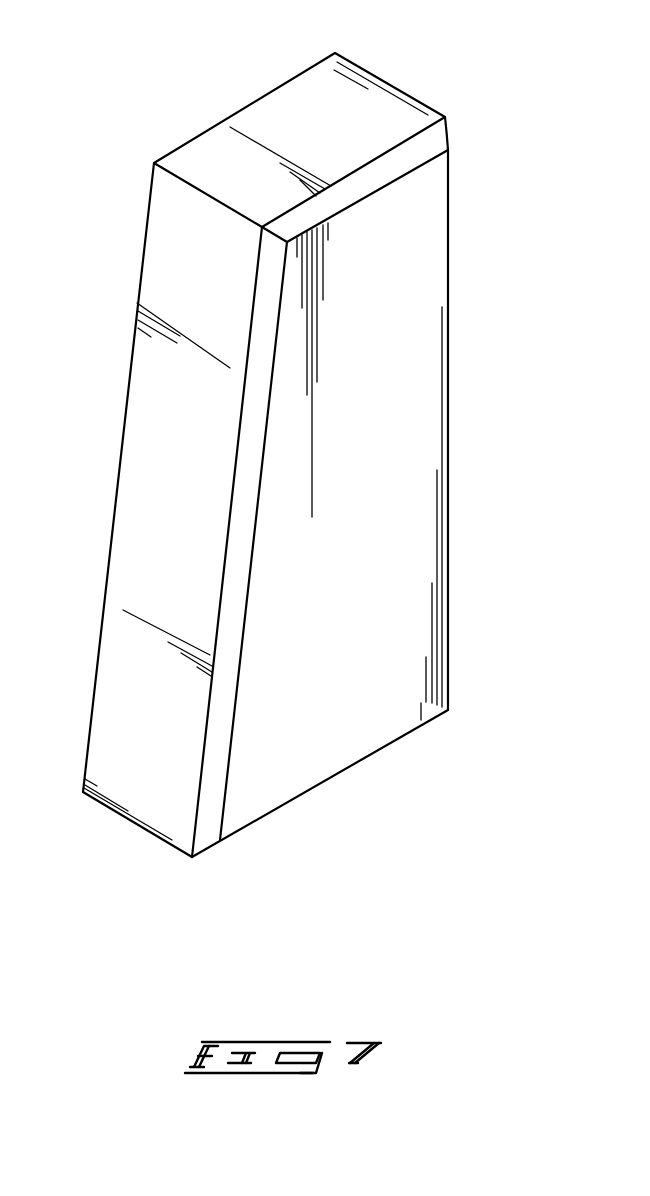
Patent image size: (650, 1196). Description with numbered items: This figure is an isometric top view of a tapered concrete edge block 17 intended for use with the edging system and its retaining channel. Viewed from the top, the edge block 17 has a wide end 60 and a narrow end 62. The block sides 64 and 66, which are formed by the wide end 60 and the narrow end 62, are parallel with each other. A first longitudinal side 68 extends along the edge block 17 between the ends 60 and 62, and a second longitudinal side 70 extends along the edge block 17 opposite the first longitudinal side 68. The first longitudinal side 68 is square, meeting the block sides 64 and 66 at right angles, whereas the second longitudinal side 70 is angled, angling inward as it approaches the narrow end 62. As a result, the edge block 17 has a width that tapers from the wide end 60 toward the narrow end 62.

The concrete edge block 17 is at (73, 207).
The wide end 60 is at (332, 780).
The narrow end 62 is at (283, 120).
The block side 64 is at (393, 743).
The block side 66 is at (372, 115).
The first longitudinal side 68 is at (448, 412).
The second longitudinal side 70 is at (163, 383).